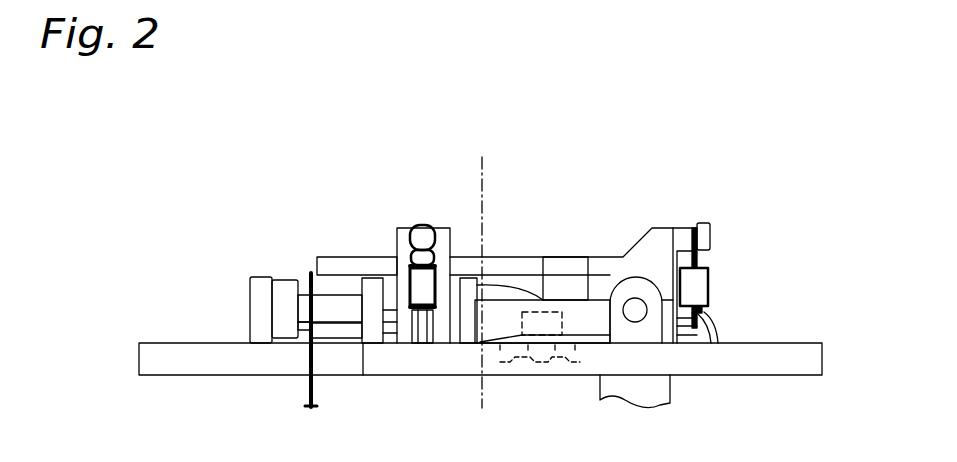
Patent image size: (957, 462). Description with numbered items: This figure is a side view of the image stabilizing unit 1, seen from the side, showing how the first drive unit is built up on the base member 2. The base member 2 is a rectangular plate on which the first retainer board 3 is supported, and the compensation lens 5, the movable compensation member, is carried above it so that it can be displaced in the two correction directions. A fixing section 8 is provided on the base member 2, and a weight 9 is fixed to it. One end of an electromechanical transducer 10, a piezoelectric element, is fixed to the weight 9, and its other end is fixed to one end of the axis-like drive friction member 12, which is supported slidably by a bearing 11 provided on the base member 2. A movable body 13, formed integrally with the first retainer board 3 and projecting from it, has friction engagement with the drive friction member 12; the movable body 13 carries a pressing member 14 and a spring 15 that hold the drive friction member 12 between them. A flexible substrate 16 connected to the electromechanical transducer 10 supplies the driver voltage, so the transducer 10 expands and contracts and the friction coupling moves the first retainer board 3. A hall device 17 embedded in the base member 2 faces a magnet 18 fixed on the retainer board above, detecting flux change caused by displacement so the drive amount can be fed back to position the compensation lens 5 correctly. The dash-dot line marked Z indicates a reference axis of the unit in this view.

The image stabilizing unit 1 is at (184, 196).
The base member 2 is at (228, 380).
The first retainer board 3 is at (531, 250).
The compensation lens 5 is at (505, 285).
The fixing section 8 is at (263, 345).
The weight 9 is at (285, 280).
The electromechanical transducer 10 is at (337, 295).
The bearing 11 is at (375, 343).
The drive friction member 12 is at (383, 278).
The movable body 13 is at (442, 220).
The pressing member 14 is at (420, 345).
The spring 15 is at (436, 310).
The flexible substrate 16 is at (312, 295).
The hall device 17 is at (538, 368).
The magnet 18 is at (568, 368).
The axis Z is at (482, 265).